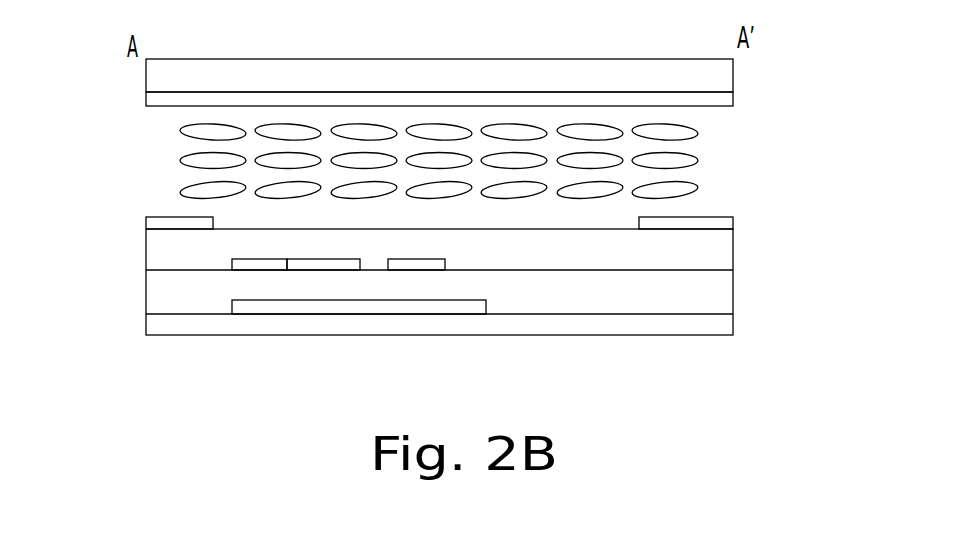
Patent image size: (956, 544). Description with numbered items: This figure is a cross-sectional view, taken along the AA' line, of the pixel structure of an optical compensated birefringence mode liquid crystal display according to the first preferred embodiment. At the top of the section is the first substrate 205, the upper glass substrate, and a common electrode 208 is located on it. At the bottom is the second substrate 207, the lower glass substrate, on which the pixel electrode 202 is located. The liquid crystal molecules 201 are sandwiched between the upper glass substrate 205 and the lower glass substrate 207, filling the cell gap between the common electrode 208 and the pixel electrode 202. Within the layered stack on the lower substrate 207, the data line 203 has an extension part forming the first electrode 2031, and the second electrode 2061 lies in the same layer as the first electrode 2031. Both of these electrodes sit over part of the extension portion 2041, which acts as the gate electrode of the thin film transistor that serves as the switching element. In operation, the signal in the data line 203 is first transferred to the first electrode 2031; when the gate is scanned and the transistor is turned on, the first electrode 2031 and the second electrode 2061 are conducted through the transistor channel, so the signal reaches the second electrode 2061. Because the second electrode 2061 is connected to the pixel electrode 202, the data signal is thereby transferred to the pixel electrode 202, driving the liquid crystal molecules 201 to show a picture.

The liquid crystal molecules 201 is at (708, 123).
The pixel electrode 202 is at (168, 217).
The data line 203 is at (257, 272).
The first electrode 2031 is at (333, 272).
The extension portion 2041 is at (478, 315).
The second electrode 2061 is at (420, 272).
The first substrate 205 is at (713, 82).
The second substrate 207 is at (677, 323).
The common electrode 208 is at (718, 100).